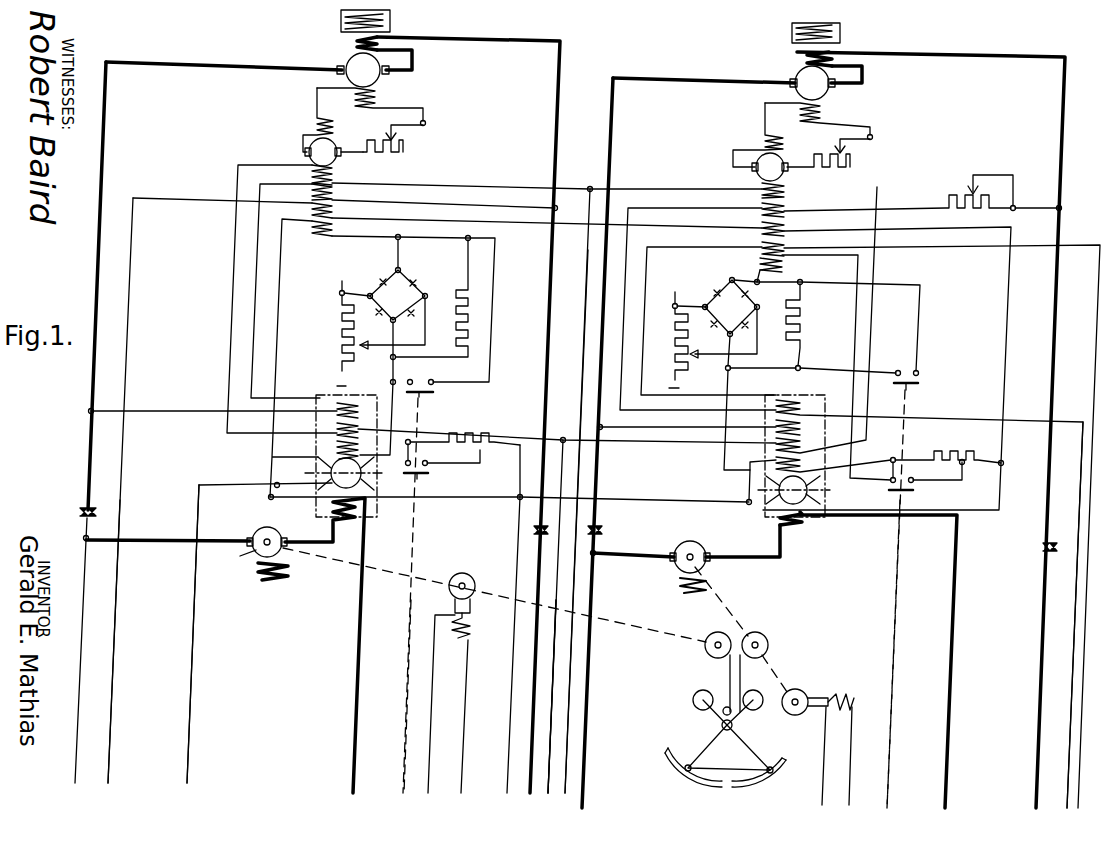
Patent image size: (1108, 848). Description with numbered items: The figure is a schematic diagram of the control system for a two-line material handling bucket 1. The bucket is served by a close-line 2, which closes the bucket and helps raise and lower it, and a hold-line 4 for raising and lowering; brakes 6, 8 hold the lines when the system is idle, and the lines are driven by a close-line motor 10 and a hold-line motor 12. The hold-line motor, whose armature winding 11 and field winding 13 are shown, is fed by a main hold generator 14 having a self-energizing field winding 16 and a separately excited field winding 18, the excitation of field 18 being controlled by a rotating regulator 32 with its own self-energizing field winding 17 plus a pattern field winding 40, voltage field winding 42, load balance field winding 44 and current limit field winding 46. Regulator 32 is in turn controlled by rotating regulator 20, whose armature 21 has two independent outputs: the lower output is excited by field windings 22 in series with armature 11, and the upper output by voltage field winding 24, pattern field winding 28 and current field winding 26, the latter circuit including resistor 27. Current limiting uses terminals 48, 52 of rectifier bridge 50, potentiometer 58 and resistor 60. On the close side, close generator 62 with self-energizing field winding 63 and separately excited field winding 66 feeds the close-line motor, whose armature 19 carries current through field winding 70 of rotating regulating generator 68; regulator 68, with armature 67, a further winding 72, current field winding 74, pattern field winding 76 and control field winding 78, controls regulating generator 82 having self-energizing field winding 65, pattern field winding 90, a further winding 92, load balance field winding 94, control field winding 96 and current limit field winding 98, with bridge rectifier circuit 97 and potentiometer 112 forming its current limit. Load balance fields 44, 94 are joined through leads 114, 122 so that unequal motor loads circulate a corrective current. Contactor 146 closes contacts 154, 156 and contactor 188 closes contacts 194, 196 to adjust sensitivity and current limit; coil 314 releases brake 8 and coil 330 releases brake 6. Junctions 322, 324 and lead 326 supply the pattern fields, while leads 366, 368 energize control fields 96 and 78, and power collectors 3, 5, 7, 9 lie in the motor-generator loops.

The material handling bucket 1 is at (681, 779).
The close-line 2 is at (741, 676).
The power collector 3 is at (80, 512).
The hold-line 4 is at (729, 676).
The power collector 5 is at (534, 530).
The brake 6 is at (803, 690).
The power collector 7 is at (602, 530).
The brake 8 is at (452, 597).
The power collector 9 is at (1043, 547).
The close-line motor 10 is at (699, 549).
The armature winding of hold-line motor 11 is at (252, 554).
The hold-line motor 12 is at (261, 534).
The field winding of hold-line motor 13 is at (288, 568).
The main hold generator 14 is at (377, 80).
The self-energizing field winding 16 is at (357, 46).
The self-energizing field winding 17 is at (330, 127).
The separately excited field winding 18 is at (358, 100).
The armature of close-line motor 19 is at (684, 542).
The rotating regulator 20 is at (337, 445).
The armature of rotating regulator 20 21 is at (330, 473).
The field winding 22 is at (340, 520).
The voltage field winding 24 is at (335, 409).
The current field winding 26 is at (335, 447).
The resistor 27 is at (485, 448).
The pattern field winding 28 is at (335, 429).
The rotating regulator 32 is at (305, 153).
The pattern field winding 40 is at (334, 171).
The voltage field winding 42 is at (334, 193).
The load balance field winding 44 is at (334, 212).
The current limit field winding 46 is at (318, 232).
The terminal 48 is at (400, 238).
The rectifier bridge 50 is at (414, 296).
The terminal 52 is at (395, 315).
The potentiometer 58 is at (340, 332).
The resistor 60 is at (462, 322).
The close generator 62 is at (796, 72).
The self-energizing field winding 63 is at (805, 50).
The self-energizing field winding 65 is at (760, 140).
The separately excited field winding 66 is at (822, 113).
The armature of rotating regulator 68 67 is at (808, 491).
The rotating regulating generator 68 is at (786, 445).
The current field winding 70 is at (790, 526).
The relay coil 72 is at (776, 426).
The current field winding 74 is at (760, 463).
The pattern field winding 76 is at (776, 444).
The control field winding 78 is at (776, 406).
The regulating generator 82 is at (762, 177).
The pattern field winding 90 is at (780, 190).
The winding 92 is at (780, 210).
The load balance field winding 94 is at (780, 229).
The control field winding 96 is at (780, 247).
The bridge rectifier circuit 97 is at (728, 290).
The current limit field winding 98 is at (780, 265).
The potentiometer 112 is at (688, 368).
The lead 114 is at (112, 756).
The lead 122 is at (189, 756).
The contactor 146 is at (408, 745).
The contact 154 is at (428, 477).
The contact 156 is at (428, 395).
The contactor 188 is at (889, 775).
The contact 194 is at (912, 492).
The contact 196 is at (913, 388).
The coil of brake 8 314 is at (470, 631).
The junction 322 is at (590, 187).
The junction 324 is at (563, 438).
The lead 326 is at (552, 755).
The coil of brake 6 330 is at (846, 696).
The lead 366 is at (942, 515).
The lead 368 is at (1073, 601).